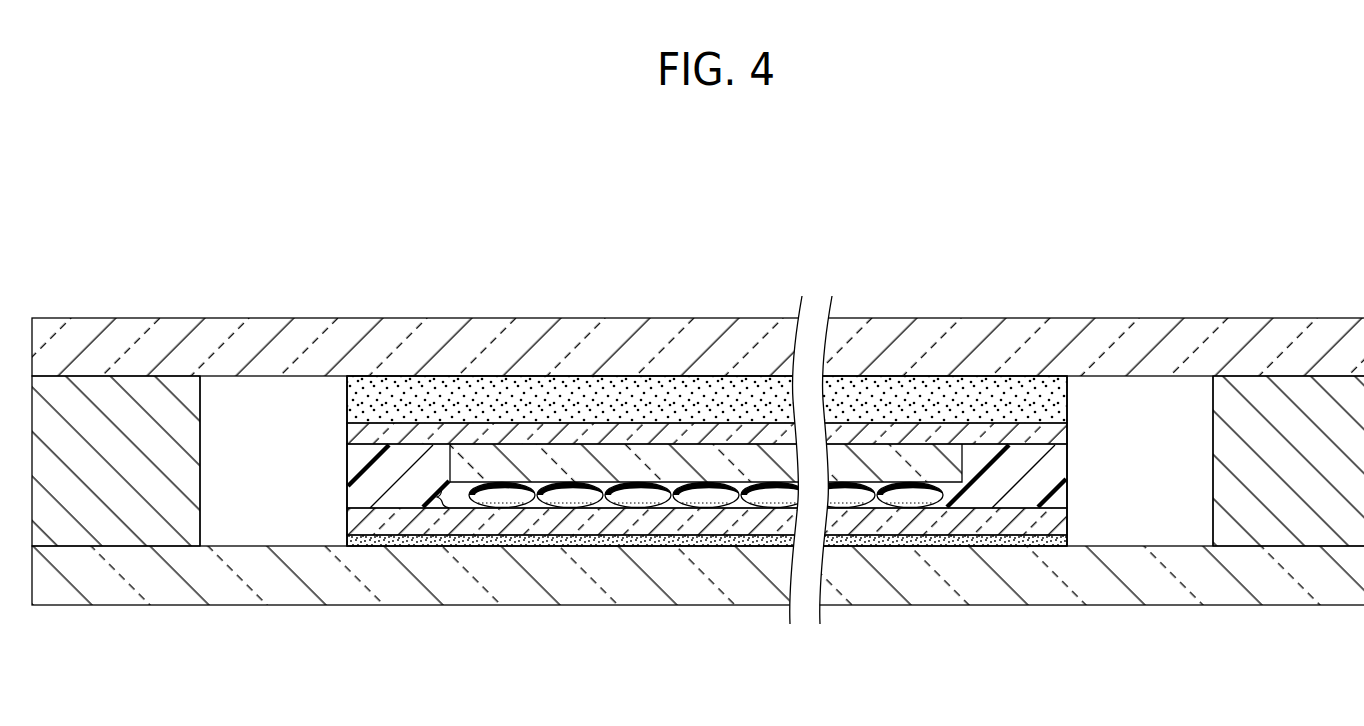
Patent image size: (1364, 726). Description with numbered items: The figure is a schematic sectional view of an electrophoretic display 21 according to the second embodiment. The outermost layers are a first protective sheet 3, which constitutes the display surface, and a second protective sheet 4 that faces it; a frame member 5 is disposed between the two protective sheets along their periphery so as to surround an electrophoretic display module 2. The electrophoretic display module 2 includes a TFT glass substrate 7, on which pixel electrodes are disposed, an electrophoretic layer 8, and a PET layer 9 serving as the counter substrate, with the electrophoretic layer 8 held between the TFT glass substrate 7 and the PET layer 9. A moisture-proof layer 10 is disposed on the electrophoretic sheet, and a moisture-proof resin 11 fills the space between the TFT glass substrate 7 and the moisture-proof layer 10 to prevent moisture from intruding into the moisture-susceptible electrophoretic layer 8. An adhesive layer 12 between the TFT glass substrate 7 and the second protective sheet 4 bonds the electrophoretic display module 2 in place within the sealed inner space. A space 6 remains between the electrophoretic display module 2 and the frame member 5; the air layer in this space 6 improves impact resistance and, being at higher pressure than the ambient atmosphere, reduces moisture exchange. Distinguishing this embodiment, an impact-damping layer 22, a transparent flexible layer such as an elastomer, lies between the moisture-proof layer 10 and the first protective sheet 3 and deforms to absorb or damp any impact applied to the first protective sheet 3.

The electrophoretic display 21 is at (254, 189).
The electrophoretic display module 2 is at (1082, 473).
The first protective sheet 3 is at (247, 335).
The second protective sheet 4 is at (112, 583).
The frame member 5 is at (141, 388).
The space 6 is at (250, 506).
The TFT glass substrate 7 is at (355, 528).
The electrophoretic layer 8 is at (422, 495).
The PET layer 9 is at (485, 458).
The moisture-proof layer 10 is at (430, 433).
The moisture-proof resin 11 is at (362, 458).
The adhesive layer 12 is at (403, 548).
The impact-damping layer 22 is at (707, 388).